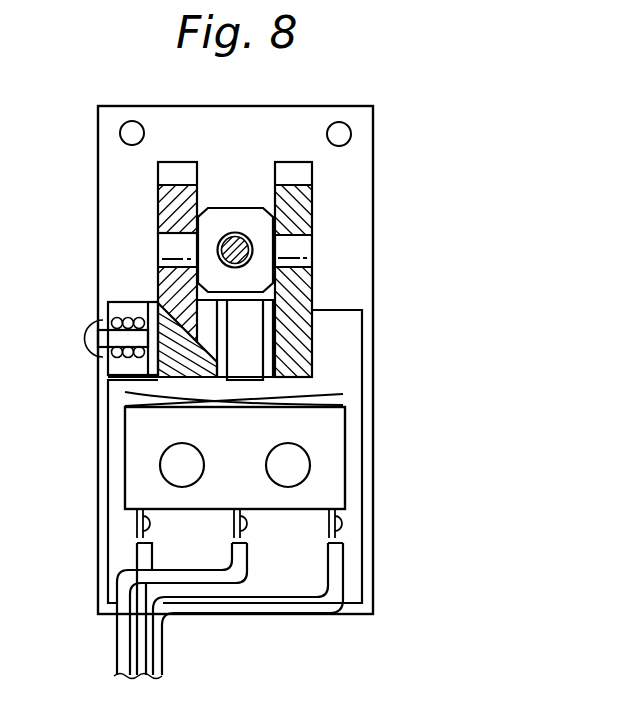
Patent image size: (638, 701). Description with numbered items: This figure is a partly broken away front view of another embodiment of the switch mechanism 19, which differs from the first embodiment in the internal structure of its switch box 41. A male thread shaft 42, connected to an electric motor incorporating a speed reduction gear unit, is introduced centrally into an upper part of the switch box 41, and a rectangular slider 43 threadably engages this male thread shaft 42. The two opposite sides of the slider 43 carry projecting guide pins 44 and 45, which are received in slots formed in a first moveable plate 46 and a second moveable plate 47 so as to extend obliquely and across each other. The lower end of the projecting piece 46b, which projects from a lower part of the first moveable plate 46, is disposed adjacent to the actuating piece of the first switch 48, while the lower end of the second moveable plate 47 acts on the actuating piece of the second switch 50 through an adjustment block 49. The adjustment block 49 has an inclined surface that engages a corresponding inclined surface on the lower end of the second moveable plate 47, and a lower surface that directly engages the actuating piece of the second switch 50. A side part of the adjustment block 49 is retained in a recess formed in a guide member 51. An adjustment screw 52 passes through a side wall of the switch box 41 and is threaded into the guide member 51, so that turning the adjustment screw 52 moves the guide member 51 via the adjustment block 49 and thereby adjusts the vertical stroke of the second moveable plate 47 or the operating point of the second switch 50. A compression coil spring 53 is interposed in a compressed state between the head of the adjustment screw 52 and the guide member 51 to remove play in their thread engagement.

The switch mechanism 19 is at (410, 82).
The switch box 41 is at (307, 110).
The male thread shaft 42 is at (250, 237).
The slider 43 is at (220, 212).
The guide pin 44 is at (305, 252).
The guide pin 45 is at (167, 237).
The first moveable plate 46 is at (312, 292).
The projecting piece 46b is at (312, 362).
The second moveable plate 47 is at (162, 282).
The first switch 48 is at (301, 535).
The adjustment block 49 is at (173, 370).
The second switch 50 is at (338, 472).
The guide member 51 is at (138, 307).
The adjustment screw 52 is at (88, 332).
The compression coil spring 53 is at (125, 357).